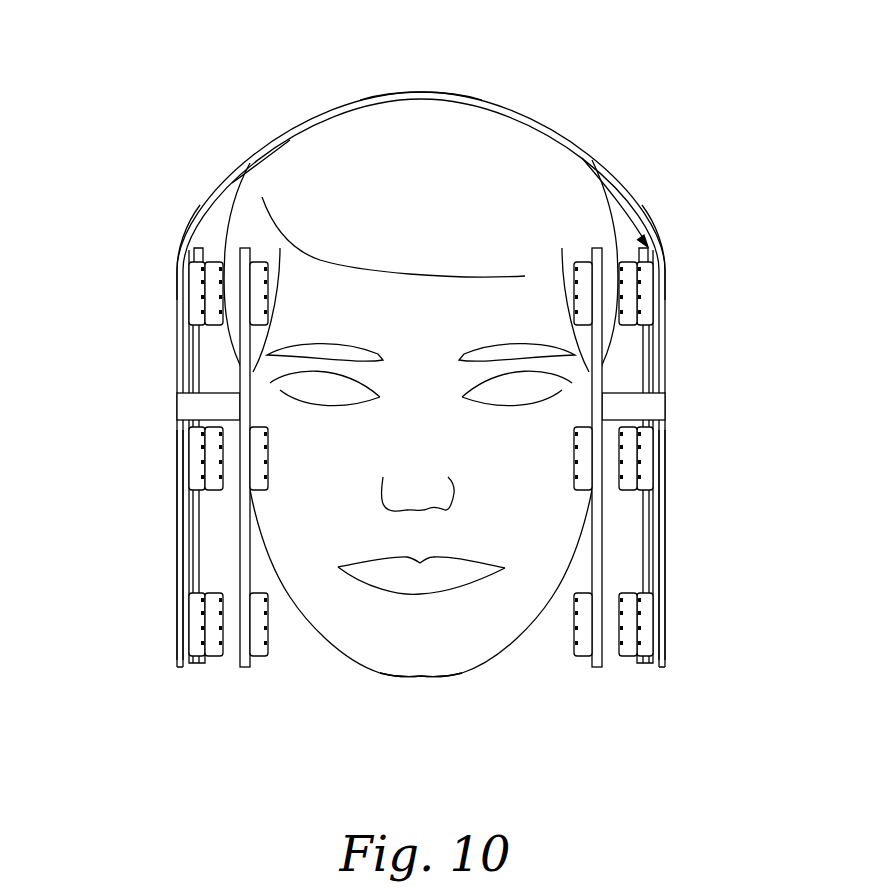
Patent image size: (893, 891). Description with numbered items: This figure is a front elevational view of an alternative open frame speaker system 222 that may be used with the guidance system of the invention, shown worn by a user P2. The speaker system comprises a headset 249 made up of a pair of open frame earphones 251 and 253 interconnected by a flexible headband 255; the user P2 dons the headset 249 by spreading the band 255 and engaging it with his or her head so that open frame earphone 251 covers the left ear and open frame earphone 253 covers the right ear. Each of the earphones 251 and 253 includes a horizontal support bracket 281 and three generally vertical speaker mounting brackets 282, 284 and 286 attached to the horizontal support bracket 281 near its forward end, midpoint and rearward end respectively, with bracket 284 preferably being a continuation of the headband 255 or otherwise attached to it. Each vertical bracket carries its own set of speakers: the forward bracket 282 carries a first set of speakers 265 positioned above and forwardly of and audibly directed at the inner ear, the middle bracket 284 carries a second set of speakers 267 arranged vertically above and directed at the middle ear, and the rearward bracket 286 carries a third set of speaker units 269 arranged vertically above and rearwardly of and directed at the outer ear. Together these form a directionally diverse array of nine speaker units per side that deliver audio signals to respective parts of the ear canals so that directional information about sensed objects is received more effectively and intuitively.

The open frame speaker system 222 is at (536, 110).
The headset 249 is at (260, 145).
The open frame earphone 251 is at (657, 262).
The open frame earphone 253 is at (218, 262).
The flexible headband 255 is at (332, 105).
The first set of speakers 265 is at (267, 658).
The second set of speakers 267 is at (656, 625).
The third set of speaker units 269 is at (201, 246).
The horizontal support bracket 281 is at (192, 404).
The forward speaker mounting bracket 282 is at (240, 670).
The middle speaker mounting bracket 284 is at (178, 378).
The rearward speaker mounting bracket 286 is at (200, 340).
The user P2 is at (458, 688).